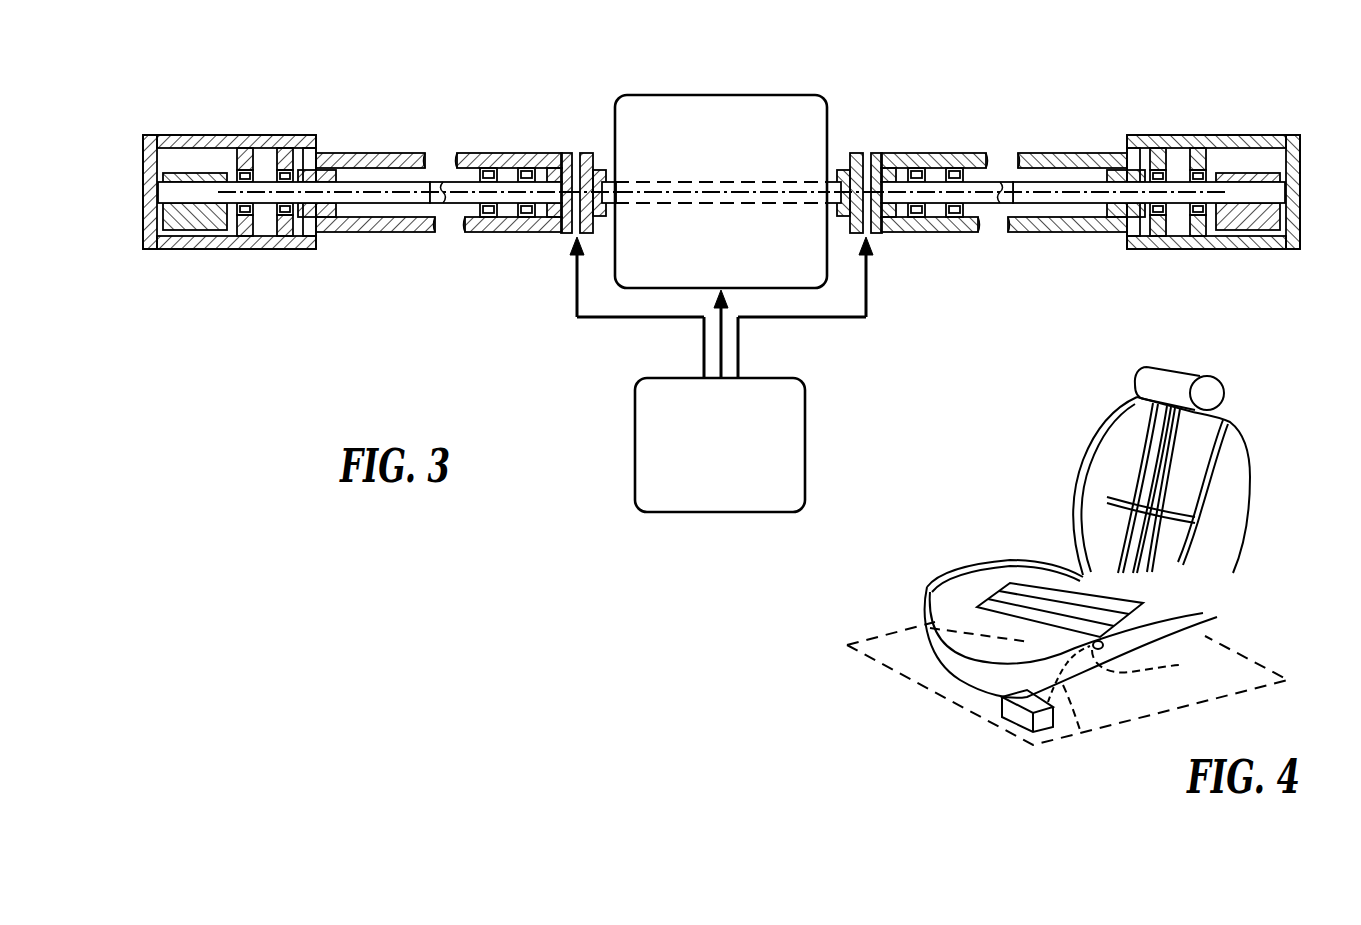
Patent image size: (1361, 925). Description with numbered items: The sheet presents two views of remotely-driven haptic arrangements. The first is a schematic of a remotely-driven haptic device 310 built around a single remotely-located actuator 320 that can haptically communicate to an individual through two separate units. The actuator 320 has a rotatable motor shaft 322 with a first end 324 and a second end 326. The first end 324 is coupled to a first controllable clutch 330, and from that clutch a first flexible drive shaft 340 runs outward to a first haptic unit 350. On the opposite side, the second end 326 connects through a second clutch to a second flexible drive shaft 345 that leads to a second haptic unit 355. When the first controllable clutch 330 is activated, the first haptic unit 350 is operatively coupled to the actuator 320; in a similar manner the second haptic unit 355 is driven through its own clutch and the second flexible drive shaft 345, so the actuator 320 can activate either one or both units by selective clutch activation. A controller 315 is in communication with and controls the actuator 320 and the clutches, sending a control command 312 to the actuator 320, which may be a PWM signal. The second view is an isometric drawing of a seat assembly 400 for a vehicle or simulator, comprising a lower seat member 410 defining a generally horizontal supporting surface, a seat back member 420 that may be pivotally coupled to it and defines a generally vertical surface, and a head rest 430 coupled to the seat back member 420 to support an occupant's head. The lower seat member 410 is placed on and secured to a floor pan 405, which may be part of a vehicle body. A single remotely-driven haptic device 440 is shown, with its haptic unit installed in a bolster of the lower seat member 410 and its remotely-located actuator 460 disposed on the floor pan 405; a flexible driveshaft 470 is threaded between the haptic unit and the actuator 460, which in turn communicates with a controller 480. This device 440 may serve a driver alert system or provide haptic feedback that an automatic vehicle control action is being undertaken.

In FIG. 3, the remotely-driven haptic device 310 is at (603, 94).
In FIG. 3, the control command 312 is at (724, 362).
In FIG. 3, the controller 315 is at (703, 456).
In FIG. 3, the remotely-located actuator 320 is at (703, 146).
In FIG. 3, the rotatable motor shaft 322 is at (738, 205).
In FIG. 3, the first end 324 is at (596, 162).
In FIG. 3, the second end 326 is at (847, 162).
In FIG. 3, the first controllable clutch 330 is at (568, 153).
In FIG. 3, the first flexible drive shaft 340 is at (410, 153).
In FIG. 3, the second flexible drive shaft 345 is at (1033, 153).
In FIG. 3, the first haptic unit 350 is at (232, 135).
In FIG. 3, the second haptic unit 355 is at (1208, 135).
In FIG. 4, the seat assembly 400 is at (1060, 474).
In FIG. 4, the floor pan 405 is at (972, 714).
In FIG. 4, the lower seat member 410 is at (950, 668).
In FIG. 4, the seat back member 420 is at (1252, 503).
In FIG. 4, the head rest 430 is at (1227, 402).
In FIG. 4, the remotely-driven haptic device 440 is at (1080, 667).
In FIG. 4, the remotely-located actuator 460 is at (1104, 647).
In FIG. 4, the flexible driveshaft 470 is at (1080, 730).
In FIG. 4, the controller 480 is at (1022, 718).